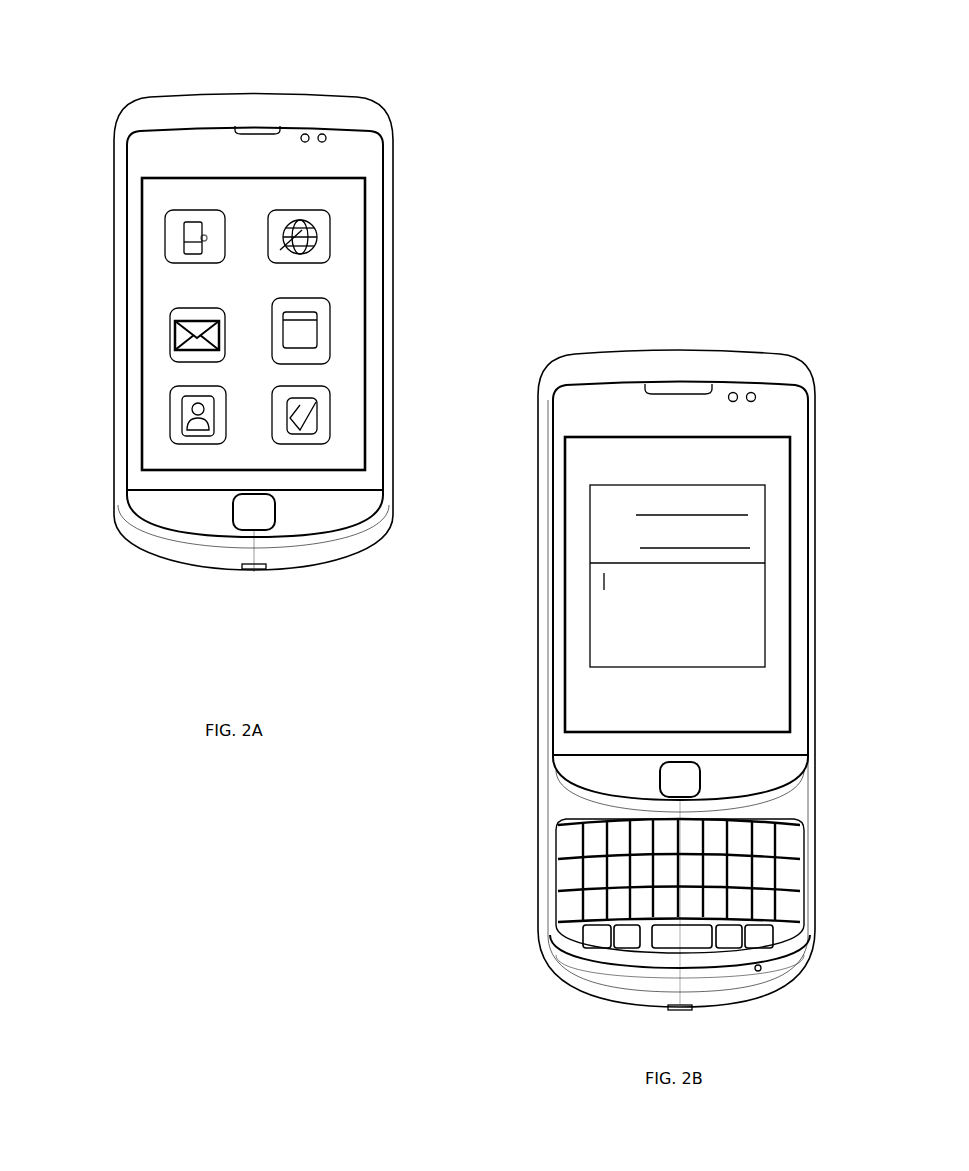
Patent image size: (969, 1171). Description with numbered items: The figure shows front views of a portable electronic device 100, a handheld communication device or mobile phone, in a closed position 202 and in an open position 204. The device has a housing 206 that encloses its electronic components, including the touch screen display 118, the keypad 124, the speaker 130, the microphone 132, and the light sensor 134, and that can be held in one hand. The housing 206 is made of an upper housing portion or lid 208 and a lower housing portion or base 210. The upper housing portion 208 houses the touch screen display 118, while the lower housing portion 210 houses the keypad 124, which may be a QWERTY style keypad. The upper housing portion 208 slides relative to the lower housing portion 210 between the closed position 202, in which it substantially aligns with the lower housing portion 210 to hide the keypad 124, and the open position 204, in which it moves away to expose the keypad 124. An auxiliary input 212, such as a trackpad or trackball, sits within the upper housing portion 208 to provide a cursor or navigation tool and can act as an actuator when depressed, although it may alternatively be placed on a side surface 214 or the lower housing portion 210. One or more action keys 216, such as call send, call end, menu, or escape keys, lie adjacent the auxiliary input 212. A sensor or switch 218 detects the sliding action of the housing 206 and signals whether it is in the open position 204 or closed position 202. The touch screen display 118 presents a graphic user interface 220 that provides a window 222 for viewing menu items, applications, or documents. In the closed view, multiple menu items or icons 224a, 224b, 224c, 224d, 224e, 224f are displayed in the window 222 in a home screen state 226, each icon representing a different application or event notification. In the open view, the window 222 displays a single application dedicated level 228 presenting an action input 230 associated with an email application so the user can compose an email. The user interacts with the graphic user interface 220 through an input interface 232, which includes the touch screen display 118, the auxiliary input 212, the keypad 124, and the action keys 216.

In FIG. 2A, the electronic device 100 is at (306, 300).
In FIG. 2B, the electronic device 100 is at (628, 627).
In FIG. 2A, the closed position 202 is at (306, 333).
In FIG. 2B, the open position 204 is at (628, 662).
In FIG. 2A, the housing 206 is at (108, 258).
In FIG. 2B, the housing 206 is at (510, 795).
In FIG. 2A, the upper housing portion 208 is at (385, 438).
In FIG. 2B, the upper housing portion 208 is at (800, 635).
In FIG. 2B, the lower housing portion 210 is at (815, 890).
In FIG. 2A, the auxiliary input 212 is at (265, 508).
In FIG. 2B, the auxiliary input 212 is at (690, 772).
In FIG. 2A, the side surface 214 is at (392, 240).
In FIG. 2A, the action keys 216 is at (180, 515).
In FIG. 2B, the action keys 216 is at (590, 760).
In FIG. 2B, the sensor or switch 218 is at (761, 968).
In FIG. 2B, the graphic user interface 220 is at (677, 584).
In FIG. 2A, the window 222 is at (254, 293).
In FIG. 2B, the window 222 is at (565, 437).
In FIG. 2A, the menu item or icon 224a is at (167, 236).
In FIG. 2A, the menu item or icon 224b is at (170, 330).
In FIG. 2A, the menu item or icon 224c is at (170, 405).
In FIG. 2A, the menu item or icon 224d is at (330, 237).
In FIG. 2A, the menu item or icon 224e is at (330, 335).
In FIG. 2A, the menu item or icon 224f is at (330, 410).
In FIG. 2A, the home screen state 226 is at (254, 312).
In FIG. 2B, the single application dedicated level 228 is at (778, 590).
In FIG. 2B, the action input 230 is at (733, 576).
In FIG. 2A, the input interface 232 is at (250, 369).
In FIG. 2B, the input interface 232 is at (628, 687).
In FIG. 2A, the touch screen display 118 is at (348, 192).
In FIG. 2B, the touch screen display 118 is at (734, 576).
In FIG. 2B, the keypad 124 is at (515, 875).
In FIG. 2A, the speaker 130 is at (258, 124).
In FIG. 2B, the speaker 130 is at (690, 382).
In FIG. 2A, the microphone 132 is at (245, 568).
In FIG. 2B, the microphone 132 is at (672, 1010).
In FIG. 2A, the light sensor 134 is at (308, 135).
In FIG. 2B, the light sensor 134 is at (733, 392).